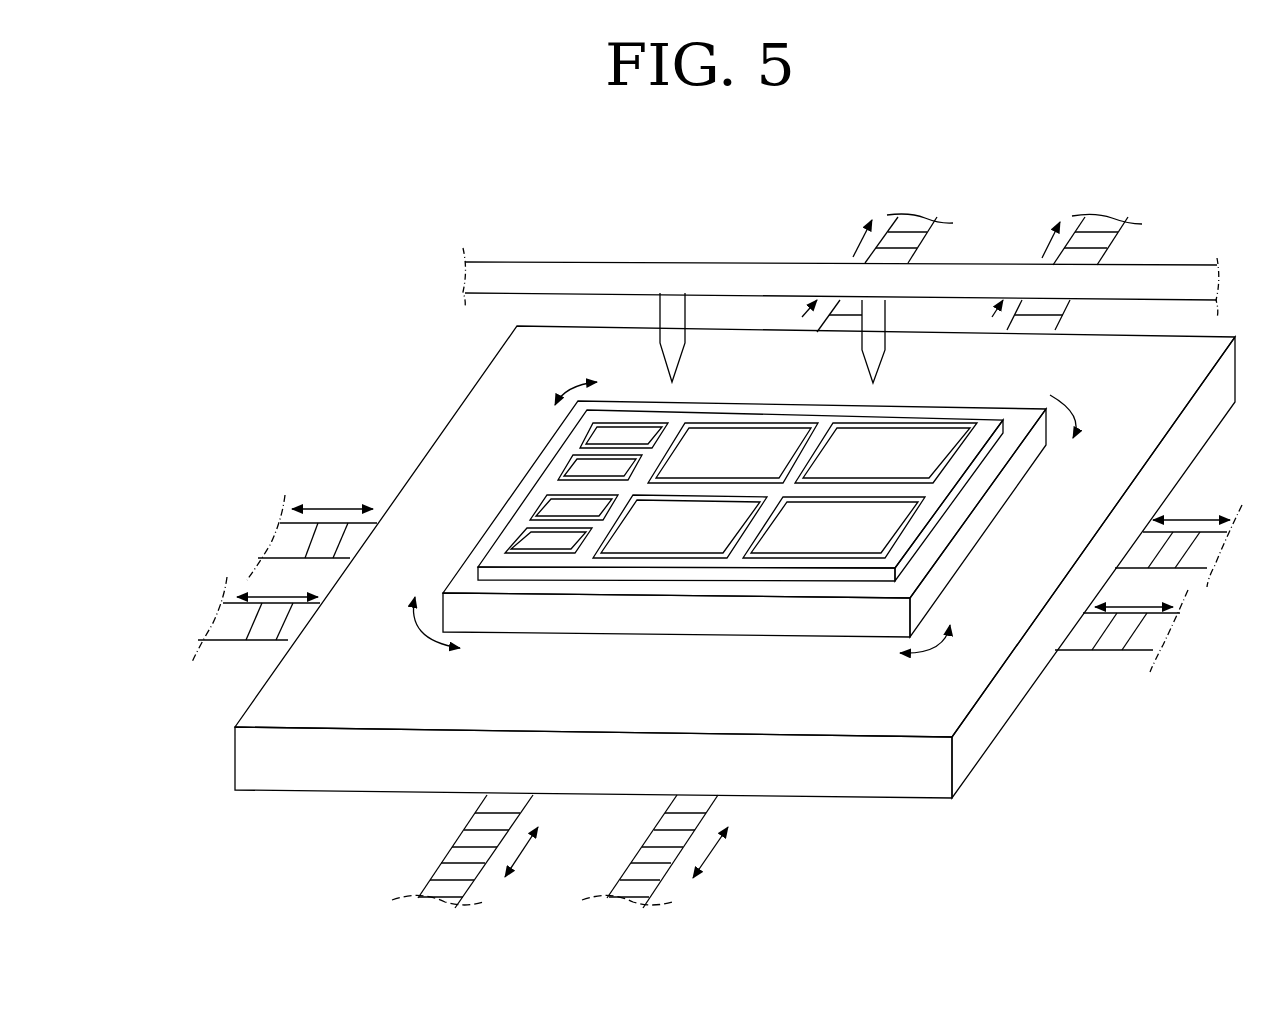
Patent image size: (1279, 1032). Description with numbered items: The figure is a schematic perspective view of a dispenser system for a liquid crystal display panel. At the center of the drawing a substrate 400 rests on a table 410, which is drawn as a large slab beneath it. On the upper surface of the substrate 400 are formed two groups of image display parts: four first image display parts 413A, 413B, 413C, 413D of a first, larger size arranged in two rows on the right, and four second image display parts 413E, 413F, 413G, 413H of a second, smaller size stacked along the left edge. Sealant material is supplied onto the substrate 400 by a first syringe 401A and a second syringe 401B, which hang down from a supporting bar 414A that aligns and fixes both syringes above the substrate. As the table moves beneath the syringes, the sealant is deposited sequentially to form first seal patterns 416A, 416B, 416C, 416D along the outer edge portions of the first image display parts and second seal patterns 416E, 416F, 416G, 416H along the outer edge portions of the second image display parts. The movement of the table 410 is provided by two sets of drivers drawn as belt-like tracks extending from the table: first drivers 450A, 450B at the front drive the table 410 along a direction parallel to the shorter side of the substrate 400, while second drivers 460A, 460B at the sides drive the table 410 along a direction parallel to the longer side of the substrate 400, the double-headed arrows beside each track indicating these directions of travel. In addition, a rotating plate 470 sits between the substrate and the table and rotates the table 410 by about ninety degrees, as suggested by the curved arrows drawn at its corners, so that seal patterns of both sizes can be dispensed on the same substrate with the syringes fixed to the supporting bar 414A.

The substrate 400 is at (1047, 395).
The first syringe 401A is at (887, 312).
The second syringe 401B is at (660, 308).
The table 410 is at (800, 800).
The first image display part 413A is at (886, 453).
The first image display part 413B is at (733, 453).
The first image display part 413C is at (834, 527).
The first image display part 413D is at (680, 526).
The second image display part 413E is at (624, 435).
The second image display part 413F is at (600, 467).
The second image display part 413G is at (574, 507).
The second image display part 413H is at (548, 540).
The supporting bar 414A is at (510, 270).
The first seal pattern 416A is at (910, 423).
The first seal pattern 416B is at (715, 423).
The first seal pattern 416C is at (817, 560).
The first seal pattern 416D is at (663, 558).
The second seal pattern 416E is at (633, 423).
The second seal pattern 416F is at (562, 468).
The second seal pattern 416G is at (533, 508).
The second seal pattern 416H is at (510, 540).
The first driver 450A is at (420, 888).
The first driver 450B is at (660, 893).
The second driver 460A is at (275, 543).
The second driver 460B is at (217, 625).
The rotating plate 470 is at (1042, 437).